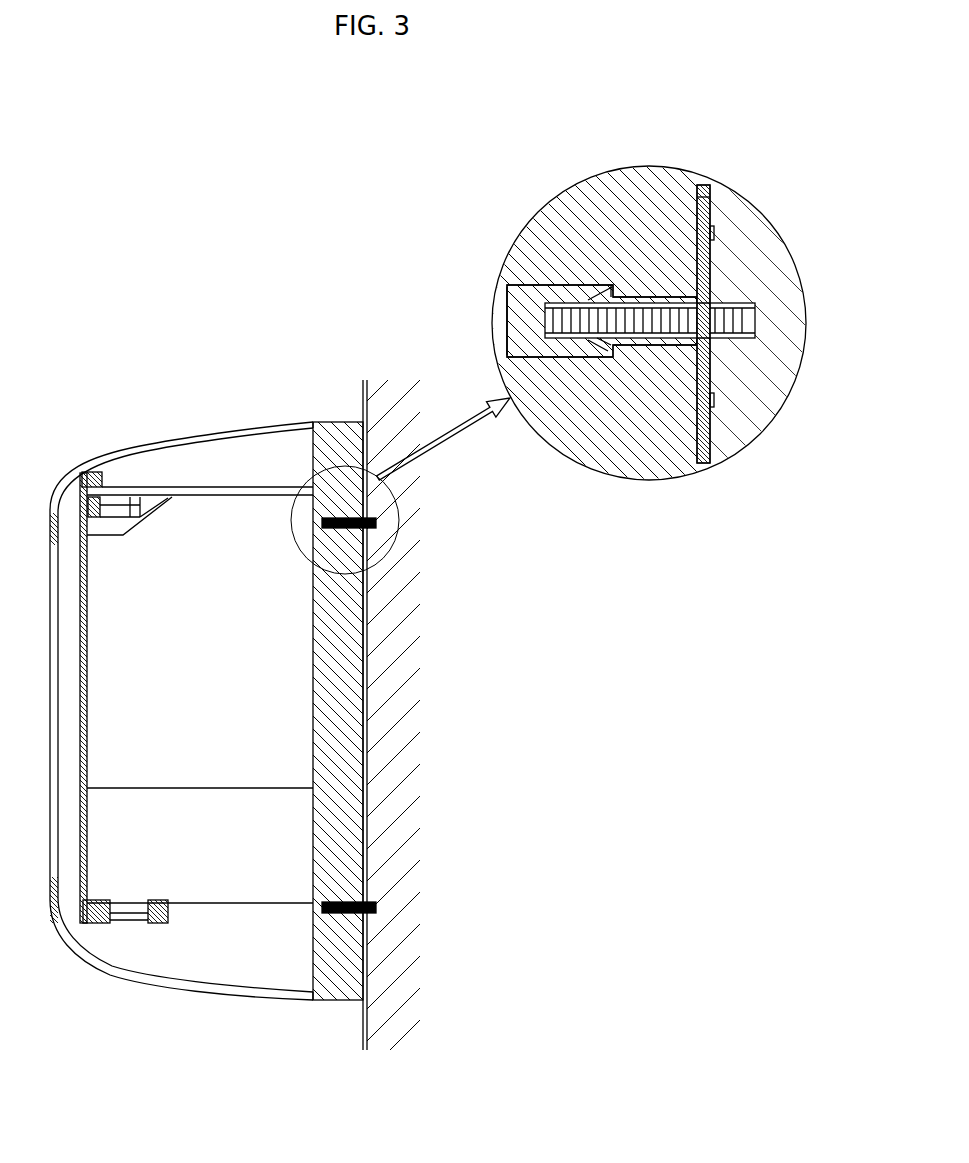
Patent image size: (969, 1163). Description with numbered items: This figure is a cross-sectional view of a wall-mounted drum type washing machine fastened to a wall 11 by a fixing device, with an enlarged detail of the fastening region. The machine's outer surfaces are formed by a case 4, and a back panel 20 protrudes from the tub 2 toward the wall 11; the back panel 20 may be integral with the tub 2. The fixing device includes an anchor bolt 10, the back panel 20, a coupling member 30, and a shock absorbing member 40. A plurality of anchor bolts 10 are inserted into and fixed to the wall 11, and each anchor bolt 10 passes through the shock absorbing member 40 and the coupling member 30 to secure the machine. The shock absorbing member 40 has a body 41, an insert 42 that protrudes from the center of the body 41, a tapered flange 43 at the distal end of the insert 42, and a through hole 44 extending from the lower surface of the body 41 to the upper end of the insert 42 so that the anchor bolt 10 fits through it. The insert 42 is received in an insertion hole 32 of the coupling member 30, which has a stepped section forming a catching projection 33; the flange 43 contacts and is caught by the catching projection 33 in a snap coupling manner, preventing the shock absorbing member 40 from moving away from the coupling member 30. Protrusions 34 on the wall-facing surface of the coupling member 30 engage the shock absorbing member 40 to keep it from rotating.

The tub 2 is at (197, 487).
The case 4 is at (228, 424).
The anchor bolt 10 is at (757, 312).
The wall 11 is at (373, 637).
The back panel 20 is at (333, 421).
The coupling member 30 is at (500, 318).
The insertion hole 32 is at (523, 298).
The catching projection 33 is at (613, 287).
The protrusions 34 is at (714, 233).
The shock absorbing member 40 is at (714, 188).
The body 41 is at (713, 203).
The insert 42 is at (645, 290).
The flange 43 is at (597, 338).
The through hole 44 is at (697, 321).